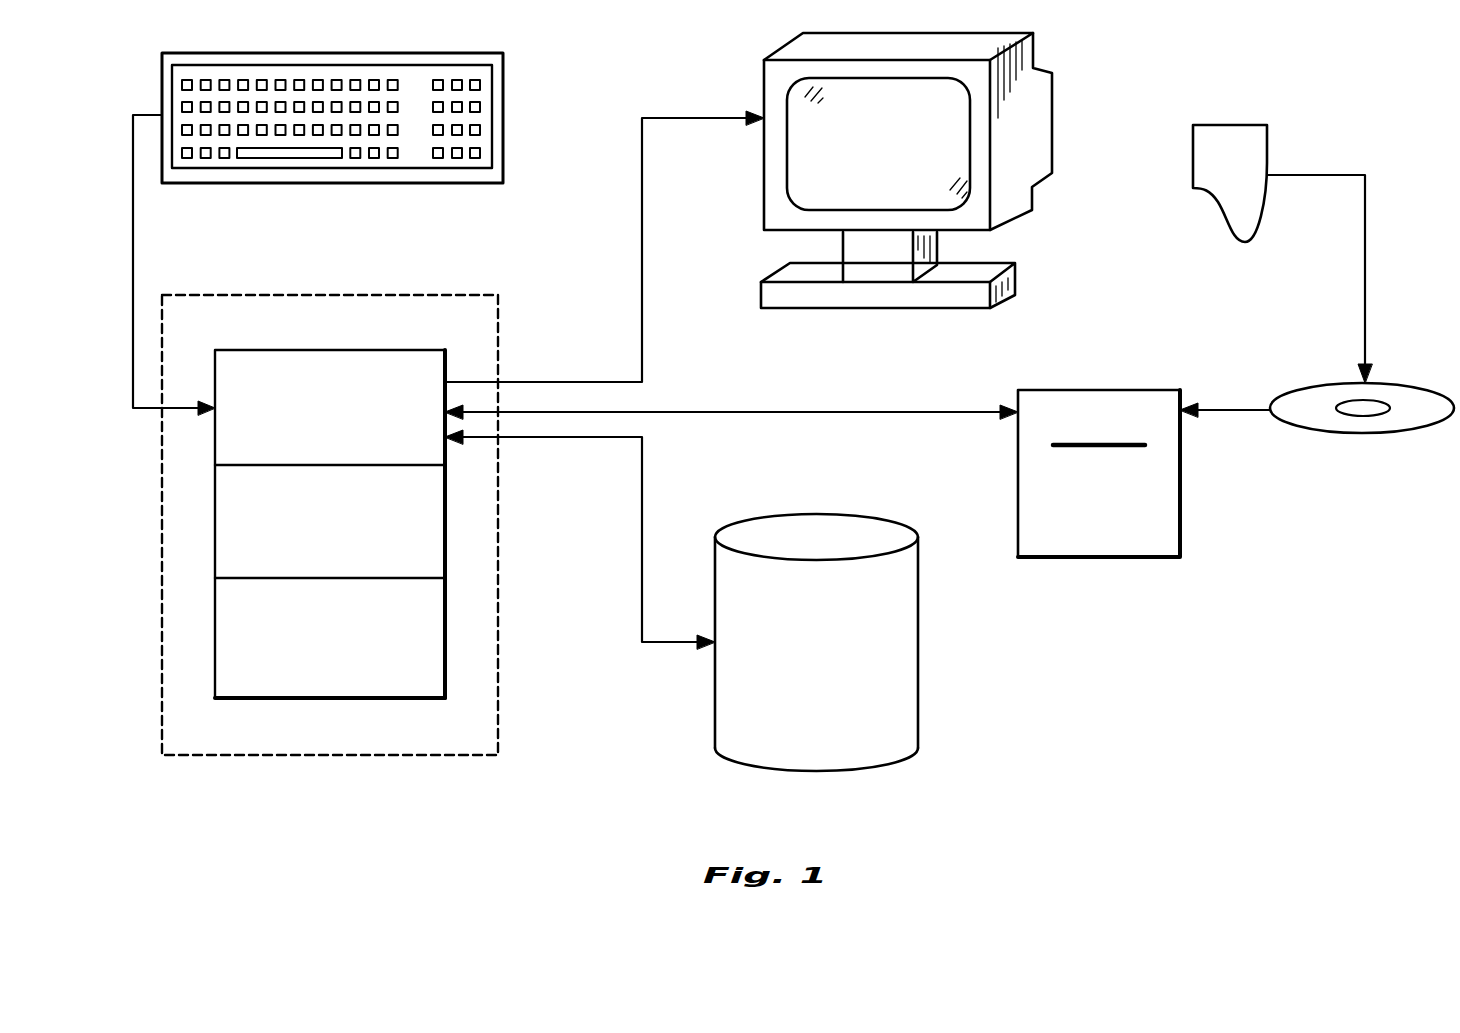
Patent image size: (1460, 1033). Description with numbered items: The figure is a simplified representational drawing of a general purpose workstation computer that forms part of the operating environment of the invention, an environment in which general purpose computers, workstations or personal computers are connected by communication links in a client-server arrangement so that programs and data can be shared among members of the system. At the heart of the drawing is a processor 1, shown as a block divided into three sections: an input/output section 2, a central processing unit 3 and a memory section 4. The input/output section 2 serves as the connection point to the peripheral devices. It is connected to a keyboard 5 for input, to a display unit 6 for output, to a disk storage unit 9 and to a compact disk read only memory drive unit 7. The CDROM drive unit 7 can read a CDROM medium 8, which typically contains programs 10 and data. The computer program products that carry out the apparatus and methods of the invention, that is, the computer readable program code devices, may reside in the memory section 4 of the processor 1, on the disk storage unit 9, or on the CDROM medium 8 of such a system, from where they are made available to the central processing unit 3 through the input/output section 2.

The processor 1 is at (450, 295).
The input/output section 2 is at (307, 355).
The central processing unit 3 is at (447, 540).
The memory section 4 is at (447, 682).
The keyboard 5 is at (480, 57).
The display unit 6 is at (977, 47).
The CDROM drive unit 7 is at (1050, 390).
The CDROM medium 8 is at (1338, 390).
The disk storage unit 9 is at (918, 617).
The programs 10 is at (1207, 135).